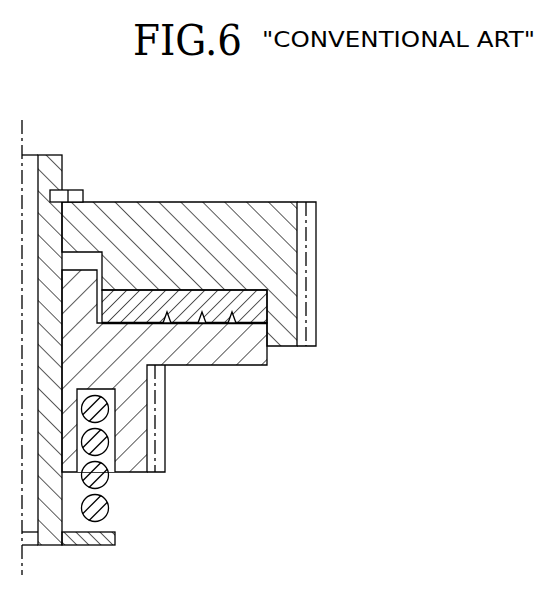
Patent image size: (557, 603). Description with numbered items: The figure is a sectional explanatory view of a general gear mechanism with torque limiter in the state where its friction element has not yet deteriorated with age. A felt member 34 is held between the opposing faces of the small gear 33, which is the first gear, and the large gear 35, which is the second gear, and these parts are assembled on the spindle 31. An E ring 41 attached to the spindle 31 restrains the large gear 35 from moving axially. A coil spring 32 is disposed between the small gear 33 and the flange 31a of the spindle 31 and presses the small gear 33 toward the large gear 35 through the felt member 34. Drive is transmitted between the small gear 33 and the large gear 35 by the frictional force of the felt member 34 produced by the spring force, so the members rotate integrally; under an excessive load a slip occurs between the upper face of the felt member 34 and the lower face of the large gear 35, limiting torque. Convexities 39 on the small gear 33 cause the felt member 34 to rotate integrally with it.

The spindle 31 is at (50, 155).
The flange of the spindle 31a is at (80, 548).
The coil spring 32 is at (114, 497).
The small gear 33 is at (162, 422).
The felt member 34 is at (243, 305).
The large gear 35 is at (242, 215).
The convexities 39 is at (203, 332).
The E ring 41 is at (78, 190).